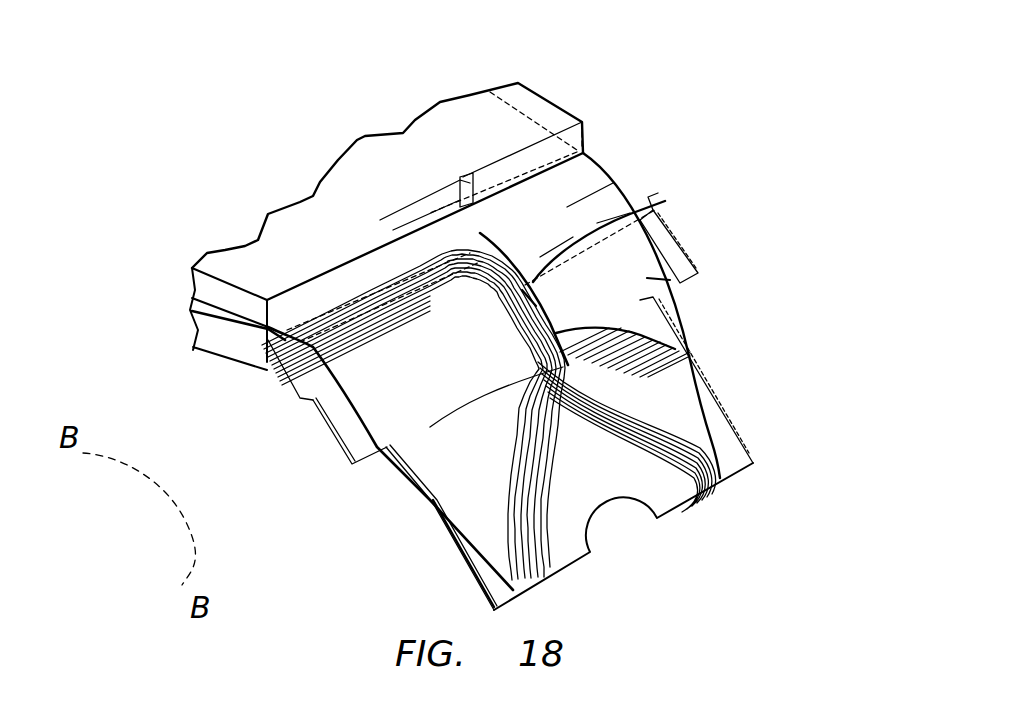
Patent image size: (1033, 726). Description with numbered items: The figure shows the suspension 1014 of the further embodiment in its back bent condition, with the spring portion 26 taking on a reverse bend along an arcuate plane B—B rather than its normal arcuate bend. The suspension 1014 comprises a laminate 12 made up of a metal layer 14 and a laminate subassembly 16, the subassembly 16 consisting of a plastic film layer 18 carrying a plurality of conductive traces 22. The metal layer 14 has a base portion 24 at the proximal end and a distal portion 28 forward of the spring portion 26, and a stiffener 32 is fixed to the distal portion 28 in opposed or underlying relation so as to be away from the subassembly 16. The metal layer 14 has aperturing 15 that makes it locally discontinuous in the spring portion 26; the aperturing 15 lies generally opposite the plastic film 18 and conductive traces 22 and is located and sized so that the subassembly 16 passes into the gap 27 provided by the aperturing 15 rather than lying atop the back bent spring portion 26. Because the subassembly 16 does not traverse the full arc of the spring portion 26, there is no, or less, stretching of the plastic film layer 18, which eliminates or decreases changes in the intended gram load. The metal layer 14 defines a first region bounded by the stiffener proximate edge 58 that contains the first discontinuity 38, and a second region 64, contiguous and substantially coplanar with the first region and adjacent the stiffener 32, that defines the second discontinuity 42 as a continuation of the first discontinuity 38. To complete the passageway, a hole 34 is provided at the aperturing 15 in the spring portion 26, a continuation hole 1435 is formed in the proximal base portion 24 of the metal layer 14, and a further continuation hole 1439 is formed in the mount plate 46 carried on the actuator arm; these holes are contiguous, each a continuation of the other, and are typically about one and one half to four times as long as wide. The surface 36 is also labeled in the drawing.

The laminate 12 is at (622, 182).
The metal layer 14 is at (363, 420).
The aperturing 15 is at (535, 293).
The laminate subassembly 16 is at (497, 319).
The plastic film layer 18 is at (505, 250).
The conductive traces 22 is at (547, 477).
The base portion 24 is at (227, 317).
The spring portion 26 is at (592, 180).
The gap 27 is at (620, 240).
The distal portion 28 is at (687, 415).
The stiffener 32 is at (680, 265).
The hole 34 is at (560, 207).
The support surface 36 is at (620, 327).
The first discontinuity 38 is at (447, 300).
The second discontinuity 42 is at (410, 457).
The mount plate 46 is at (188, 283).
The stiffener proximate edge 58 is at (648, 210).
The second region 64 is at (643, 278).
The suspension 1014 is at (319, 122).
The continuation hole 1435 is at (447, 233).
The continuation hole 1439 is at (447, 197).